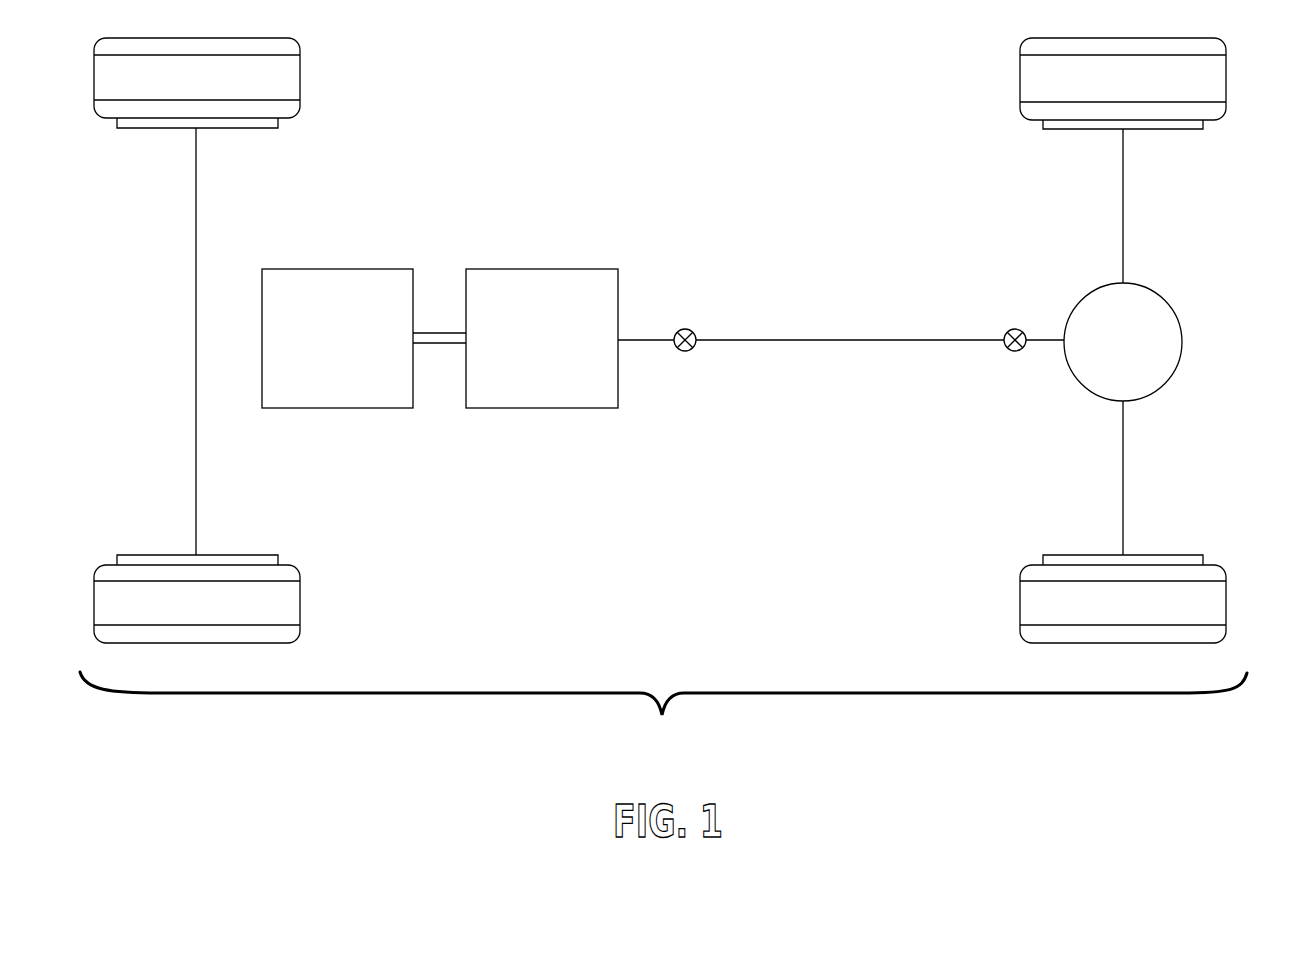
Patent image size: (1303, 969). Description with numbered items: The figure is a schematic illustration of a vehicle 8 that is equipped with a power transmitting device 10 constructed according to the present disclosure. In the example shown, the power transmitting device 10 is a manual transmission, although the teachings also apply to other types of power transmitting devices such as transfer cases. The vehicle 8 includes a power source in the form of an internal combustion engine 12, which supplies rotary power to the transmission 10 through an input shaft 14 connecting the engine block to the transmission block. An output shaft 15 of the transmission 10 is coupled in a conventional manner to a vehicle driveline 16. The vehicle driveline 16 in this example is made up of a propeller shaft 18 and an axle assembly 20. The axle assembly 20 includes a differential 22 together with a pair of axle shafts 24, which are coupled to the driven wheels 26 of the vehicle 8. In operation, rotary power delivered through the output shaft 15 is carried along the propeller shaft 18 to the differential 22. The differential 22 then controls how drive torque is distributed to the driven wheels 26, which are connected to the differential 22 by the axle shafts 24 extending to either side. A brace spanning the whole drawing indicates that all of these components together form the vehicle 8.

The vehicle 8 is at (366, 712).
The power transmitting device 10 is at (595, 262).
The internal combustion engine 12 is at (342, 288).
The input shaft 14 is at (438, 333).
The output shaft 15 is at (652, 338).
The vehicle driveline 16 is at (916, 248).
The propeller shaft 18 is at (866, 342).
The axle assembly 20 is at (1082, 258).
The differential 22 is at (1162, 313).
The axle shafts 24 is at (1125, 183).
The driven wheels 26 is at (1214, 75).